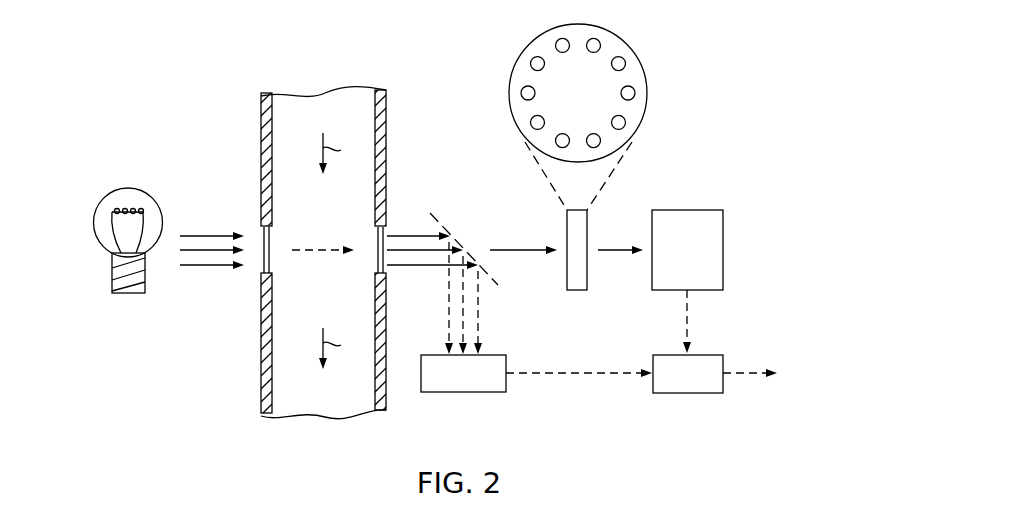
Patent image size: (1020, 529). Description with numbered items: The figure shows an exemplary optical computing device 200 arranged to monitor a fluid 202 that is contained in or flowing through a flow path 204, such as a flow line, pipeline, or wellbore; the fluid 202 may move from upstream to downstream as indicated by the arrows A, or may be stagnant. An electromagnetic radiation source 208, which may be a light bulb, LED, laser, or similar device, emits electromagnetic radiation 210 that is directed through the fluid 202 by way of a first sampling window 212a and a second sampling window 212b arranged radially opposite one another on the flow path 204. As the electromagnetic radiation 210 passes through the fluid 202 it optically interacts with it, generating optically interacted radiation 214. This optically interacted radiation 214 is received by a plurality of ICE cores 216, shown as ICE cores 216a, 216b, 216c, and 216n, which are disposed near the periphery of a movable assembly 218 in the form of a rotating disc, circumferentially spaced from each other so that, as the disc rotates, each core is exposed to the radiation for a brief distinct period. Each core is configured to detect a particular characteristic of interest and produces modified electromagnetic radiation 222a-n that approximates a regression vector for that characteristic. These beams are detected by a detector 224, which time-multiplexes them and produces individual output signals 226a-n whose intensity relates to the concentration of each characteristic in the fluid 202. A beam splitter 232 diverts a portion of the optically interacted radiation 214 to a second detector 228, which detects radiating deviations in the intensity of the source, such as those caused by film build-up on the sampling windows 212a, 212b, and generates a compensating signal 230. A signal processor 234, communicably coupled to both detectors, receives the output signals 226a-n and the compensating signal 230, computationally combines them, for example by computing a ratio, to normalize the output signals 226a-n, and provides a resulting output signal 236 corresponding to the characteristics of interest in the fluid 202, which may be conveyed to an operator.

The optical computing device 200 is at (150, 88).
The fluid 202 is at (307, 222).
The flow path 204 is at (386, 113).
The electromagnetic radiation source 208 is at (110, 203).
The electromagnetic radiation 210 is at (210, 236).
The first sampling window 212a is at (262, 270).
The second sampling window 212b is at (386, 272).
The optically interacted radiation 214 is at (412, 235).
The ICE cores 216 is at (567, 290).
The ICE core 216a is at (600, 45).
The ICE core 216b is at (625, 63).
The ICE core 216c is at (635, 93).
The ICE core 216n is at (532, 58).
The movable assembly 218 is at (510, 93).
The modified electromagnetic radiation 222a-n is at (615, 248).
The detector 224 is at (672, 262).
The output signals 226a-n is at (690, 318).
The second detector 228 is at (448, 385).
The compensating signal 230 is at (531, 374).
The beam splitter 232 is at (440, 213).
The signal processor 234 is at (673, 385).
The resulting output signal 236 is at (750, 373).